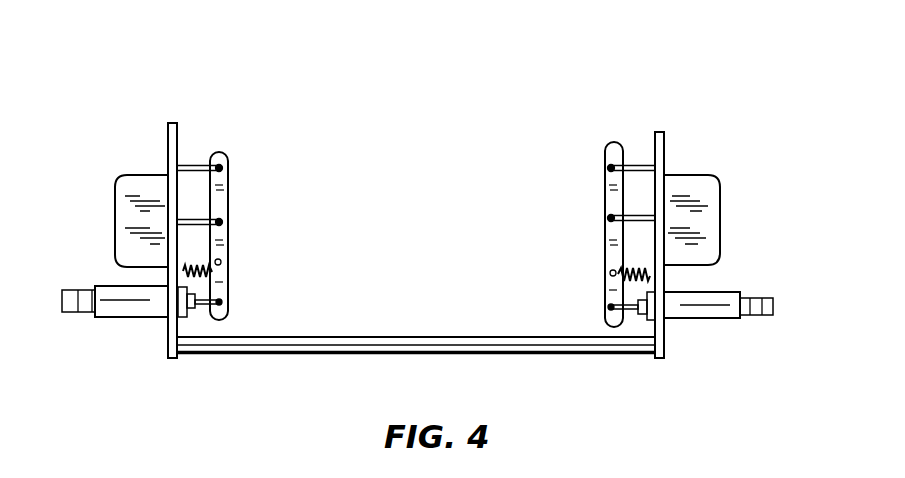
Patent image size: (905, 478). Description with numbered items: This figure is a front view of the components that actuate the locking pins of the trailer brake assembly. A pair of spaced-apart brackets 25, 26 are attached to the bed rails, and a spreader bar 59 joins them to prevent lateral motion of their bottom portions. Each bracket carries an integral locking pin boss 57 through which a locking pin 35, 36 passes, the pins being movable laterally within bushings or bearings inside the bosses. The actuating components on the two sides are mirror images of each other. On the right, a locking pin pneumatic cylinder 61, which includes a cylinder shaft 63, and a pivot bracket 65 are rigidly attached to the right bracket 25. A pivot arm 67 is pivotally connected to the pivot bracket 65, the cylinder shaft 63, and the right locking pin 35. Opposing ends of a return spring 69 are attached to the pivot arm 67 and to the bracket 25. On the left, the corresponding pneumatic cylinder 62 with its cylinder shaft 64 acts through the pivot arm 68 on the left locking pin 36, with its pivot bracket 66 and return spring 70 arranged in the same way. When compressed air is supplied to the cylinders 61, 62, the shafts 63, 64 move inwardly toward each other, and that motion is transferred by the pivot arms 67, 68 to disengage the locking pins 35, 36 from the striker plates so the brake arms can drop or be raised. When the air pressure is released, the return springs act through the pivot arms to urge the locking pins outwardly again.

The right bracket 25 is at (667, 327).
The left bracket 26 is at (168, 143).
The right locking pin 35 is at (773, 300).
The left locking pin 36 is at (72, 295).
The locking pin boss 57 is at (137, 307).
The spreader bar 59 is at (424, 338).
The locking pin pneumatic cylinder 61 is at (713, 227).
The locking pin pneumatic cylinder 62 is at (127, 218).
The cylinder shaft 63 is at (625, 215).
The cylinder shaft 64 is at (203, 214).
The pivot bracket 65 is at (633, 165).
The left upper guide bolt 66 is at (197, 164).
The pivot arm 67 is at (605, 230).
The pivot arm 68 is at (227, 233).
The return spring 69 is at (622, 260).
The left spring 70 is at (198, 252).